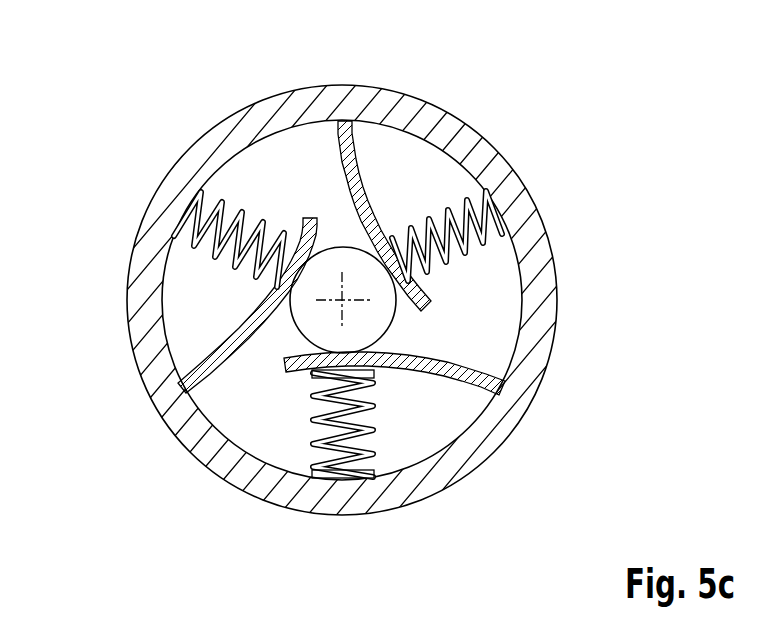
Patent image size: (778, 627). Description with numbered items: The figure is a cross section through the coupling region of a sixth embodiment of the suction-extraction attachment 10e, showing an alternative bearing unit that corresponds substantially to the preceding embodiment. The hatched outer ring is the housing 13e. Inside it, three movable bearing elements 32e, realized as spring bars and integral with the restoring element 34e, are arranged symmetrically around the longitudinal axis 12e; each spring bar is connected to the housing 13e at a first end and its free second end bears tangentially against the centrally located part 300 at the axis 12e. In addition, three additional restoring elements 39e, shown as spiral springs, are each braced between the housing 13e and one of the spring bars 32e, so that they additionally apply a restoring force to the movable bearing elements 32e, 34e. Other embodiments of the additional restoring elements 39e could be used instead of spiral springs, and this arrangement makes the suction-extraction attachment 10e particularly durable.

The suction-extraction attachment 10e is at (176, 90).
The housing 13e is at (435, 112).
The movable bearing elements 32e is at (350, 160).
The restoring element 34e is at (341, 258).
The additional restoring elements 39e is at (197, 248).
The longitudinal axis 12e is at (342, 300).
The cable cross-section 300 is at (380, 323).